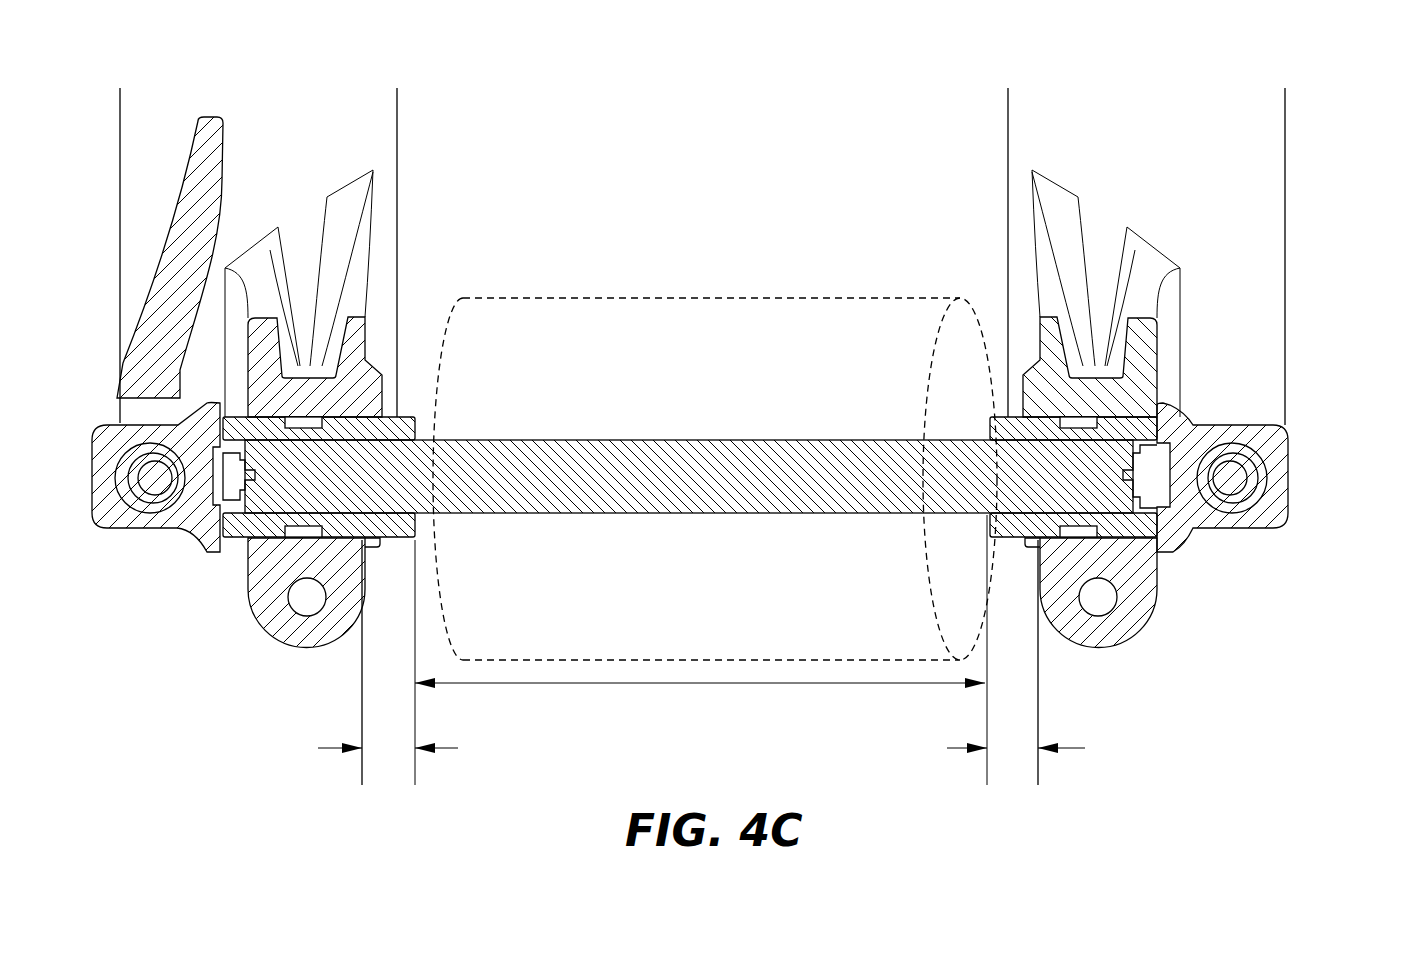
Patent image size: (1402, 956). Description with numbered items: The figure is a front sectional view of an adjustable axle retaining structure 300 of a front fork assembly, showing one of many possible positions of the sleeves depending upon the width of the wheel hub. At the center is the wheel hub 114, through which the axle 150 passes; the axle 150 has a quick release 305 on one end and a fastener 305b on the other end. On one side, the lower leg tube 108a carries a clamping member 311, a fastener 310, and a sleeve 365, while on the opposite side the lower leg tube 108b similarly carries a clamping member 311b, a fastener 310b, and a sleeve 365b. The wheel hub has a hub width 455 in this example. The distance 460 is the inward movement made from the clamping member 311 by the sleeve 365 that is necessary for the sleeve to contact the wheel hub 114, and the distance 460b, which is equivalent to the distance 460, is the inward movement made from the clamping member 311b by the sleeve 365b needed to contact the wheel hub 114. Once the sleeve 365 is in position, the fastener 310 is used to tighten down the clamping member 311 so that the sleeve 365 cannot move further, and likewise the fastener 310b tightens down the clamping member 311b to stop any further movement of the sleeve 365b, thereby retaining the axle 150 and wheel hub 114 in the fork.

The adjustable axle retaining structure 300 is at (188, 58).
The lower leg tube 108a is at (133, 165).
The lower leg tube 108b is at (1287, 278).
The wheel hub 114 is at (781, 297).
The axle 150 is at (667, 480).
The quick release 305 is at (98, 485).
The fastener 305b is at (1292, 478).
The sleeve 365 is at (238, 541).
The sleeve 365b is at (1123, 527).
The clamping member 311 is at (258, 613).
The clamping member 311b is at (1150, 614).
The fastener 310 is at (305, 645).
The fastener 310b is at (1094, 613).
The hub width 455 is at (692, 683).
The distance 460 is at (330, 748).
The distance 460b is at (1075, 748).